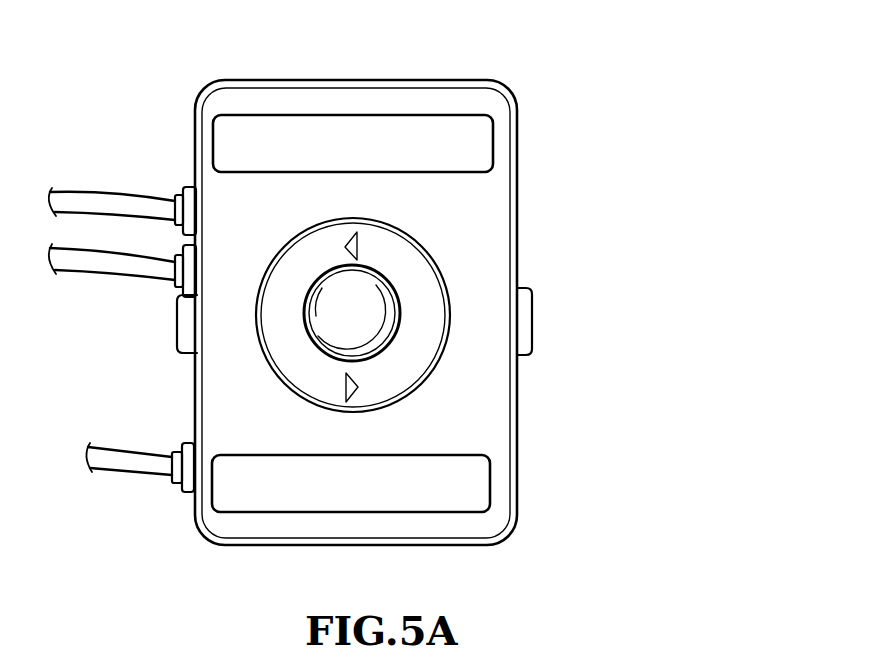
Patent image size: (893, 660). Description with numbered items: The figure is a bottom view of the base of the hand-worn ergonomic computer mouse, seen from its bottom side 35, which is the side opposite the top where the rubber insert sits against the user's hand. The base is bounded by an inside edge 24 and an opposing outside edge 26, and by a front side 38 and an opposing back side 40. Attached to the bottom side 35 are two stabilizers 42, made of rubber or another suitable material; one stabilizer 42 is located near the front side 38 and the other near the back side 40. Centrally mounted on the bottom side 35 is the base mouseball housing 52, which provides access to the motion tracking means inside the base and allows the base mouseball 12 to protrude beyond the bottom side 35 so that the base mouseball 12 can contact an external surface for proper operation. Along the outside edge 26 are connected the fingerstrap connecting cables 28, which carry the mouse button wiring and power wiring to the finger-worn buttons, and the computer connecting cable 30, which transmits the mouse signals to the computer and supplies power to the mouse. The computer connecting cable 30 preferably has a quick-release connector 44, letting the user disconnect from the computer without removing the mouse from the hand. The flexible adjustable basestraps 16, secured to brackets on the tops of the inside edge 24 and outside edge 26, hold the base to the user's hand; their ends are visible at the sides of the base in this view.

The base mouseball 12 is at (366, 330).
The flexible adjustable basestraps 16 is at (183, 327).
The inside edge 24 is at (523, 427).
The outside edge 26 is at (162, 394).
The fingerstrap connecting cables 28 is at (100, 212).
The computer connecting cable 30 is at (138, 465).
The bottom side 35 is at (470, 222).
The front side 38 is at (382, 76).
The back side 40 is at (457, 556).
The stabilizers 42 is at (303, 140).
The quick-release connector 44 is at (173, 452).
The base mouseball housing 52 is at (418, 273).